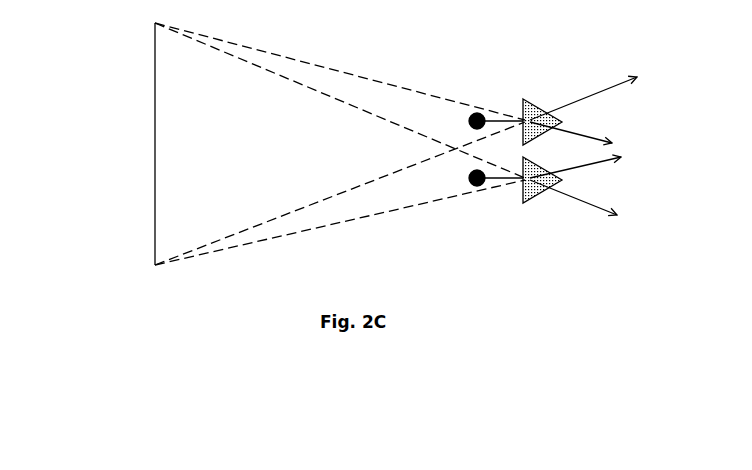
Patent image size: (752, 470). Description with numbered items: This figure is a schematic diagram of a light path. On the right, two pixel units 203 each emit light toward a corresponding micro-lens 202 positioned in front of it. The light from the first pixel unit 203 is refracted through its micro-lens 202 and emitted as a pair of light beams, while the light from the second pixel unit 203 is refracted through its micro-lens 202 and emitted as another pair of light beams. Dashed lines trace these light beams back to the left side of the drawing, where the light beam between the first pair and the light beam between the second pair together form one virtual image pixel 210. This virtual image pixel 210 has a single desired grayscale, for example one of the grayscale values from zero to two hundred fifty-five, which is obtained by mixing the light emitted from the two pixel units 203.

The virtual image pixel 210 is at (155, 98).
The pixel unit 203 is at (473, 112).
The micro-lens 202 is at (532, 96).